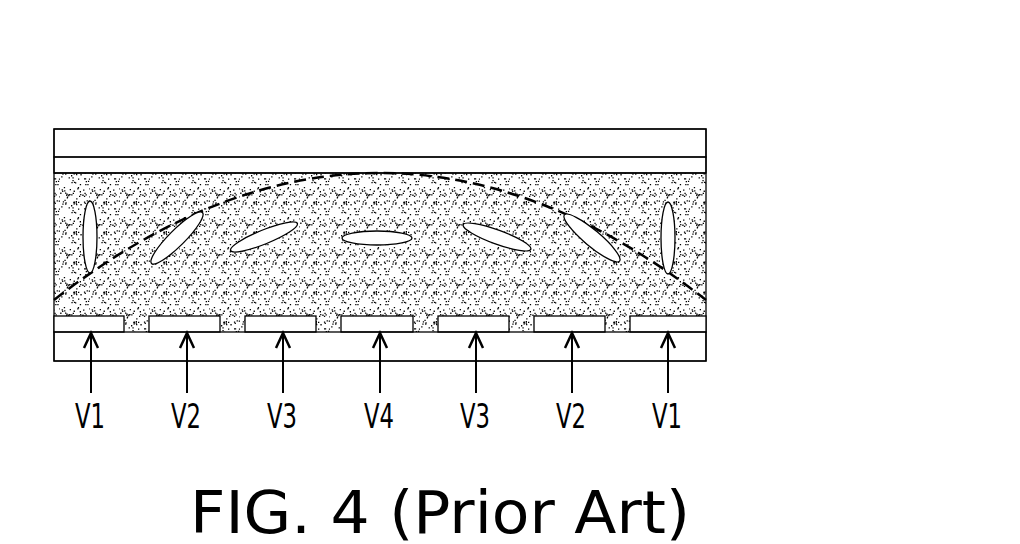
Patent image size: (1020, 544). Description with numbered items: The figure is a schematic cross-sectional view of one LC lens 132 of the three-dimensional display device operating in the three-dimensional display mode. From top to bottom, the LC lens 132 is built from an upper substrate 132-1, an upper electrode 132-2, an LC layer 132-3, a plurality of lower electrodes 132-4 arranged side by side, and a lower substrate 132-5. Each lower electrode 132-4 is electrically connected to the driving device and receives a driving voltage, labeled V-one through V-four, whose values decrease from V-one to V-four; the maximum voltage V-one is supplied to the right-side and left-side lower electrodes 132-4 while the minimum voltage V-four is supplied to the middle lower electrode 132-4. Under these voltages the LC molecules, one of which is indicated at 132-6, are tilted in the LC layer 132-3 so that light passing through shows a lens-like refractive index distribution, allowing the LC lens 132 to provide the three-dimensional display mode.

The LC lens 132 is at (818, 458).
The upper substrate 132-1 is at (693, 142).
The upper electrode 132-2 is at (698, 167).
The LC layer 132-3 is at (712, 172).
The lower electrodes 132-4 is at (687, 323).
The lower substrate 132-5 is at (693, 347).
The liquid crystal molecule 132-6 is at (380, 235).